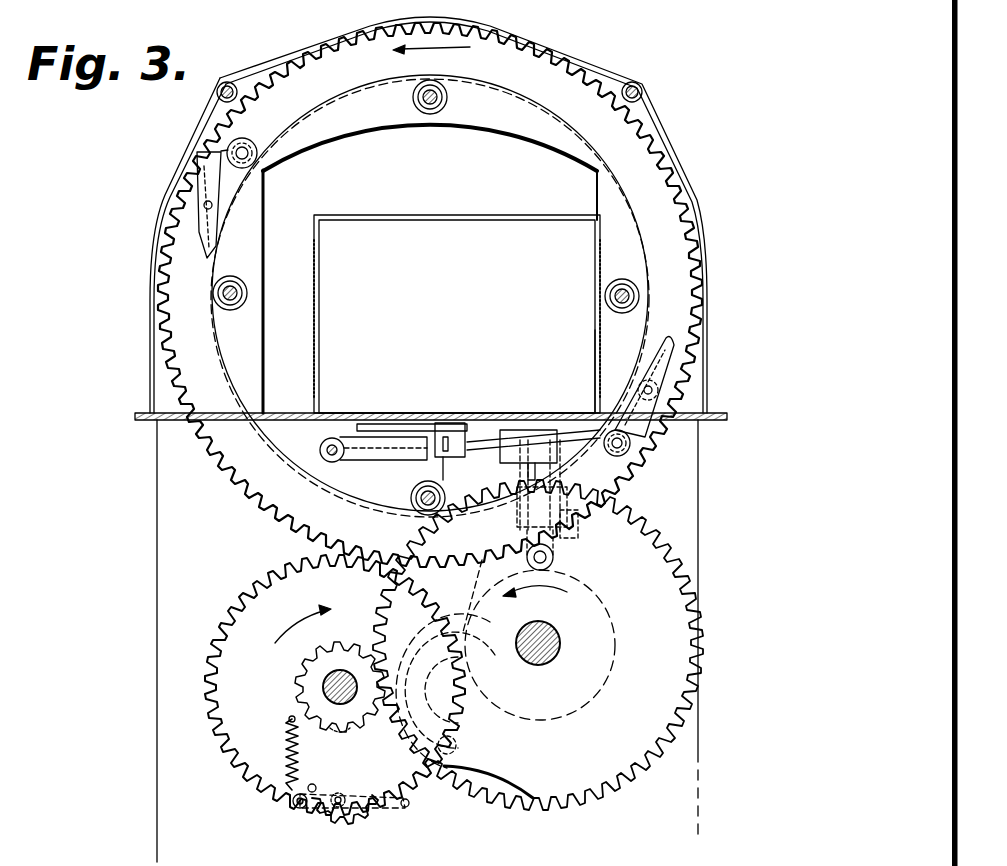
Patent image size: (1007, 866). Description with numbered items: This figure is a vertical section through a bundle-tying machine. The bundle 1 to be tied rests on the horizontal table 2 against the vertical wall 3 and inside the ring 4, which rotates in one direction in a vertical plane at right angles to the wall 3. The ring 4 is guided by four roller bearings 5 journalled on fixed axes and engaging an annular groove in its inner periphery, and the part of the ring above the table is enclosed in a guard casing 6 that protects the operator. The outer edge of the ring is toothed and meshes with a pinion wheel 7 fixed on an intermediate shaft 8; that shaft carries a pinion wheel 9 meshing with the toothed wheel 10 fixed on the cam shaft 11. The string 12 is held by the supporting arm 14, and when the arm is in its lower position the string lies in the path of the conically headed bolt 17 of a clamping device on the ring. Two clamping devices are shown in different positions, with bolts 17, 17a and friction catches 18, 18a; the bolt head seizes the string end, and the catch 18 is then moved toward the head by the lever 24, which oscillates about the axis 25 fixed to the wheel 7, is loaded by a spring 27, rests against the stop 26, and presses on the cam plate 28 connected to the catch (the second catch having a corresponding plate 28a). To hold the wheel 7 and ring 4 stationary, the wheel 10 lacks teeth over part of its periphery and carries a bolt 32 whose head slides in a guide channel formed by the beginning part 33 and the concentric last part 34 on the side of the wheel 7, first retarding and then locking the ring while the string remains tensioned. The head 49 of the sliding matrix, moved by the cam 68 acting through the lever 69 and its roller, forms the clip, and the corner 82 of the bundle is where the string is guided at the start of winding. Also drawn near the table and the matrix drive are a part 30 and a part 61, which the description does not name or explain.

The bundle 1 is at (398, 230).
The horizontal table 2 is at (343, 413).
The vertical wall 3 is at (598, 327).
The ring 4 is at (218, 392).
The roller bearings 5 is at (427, 112).
The guard casing 6 is at (167, 370).
The pinion wheel 7 is at (265, 787).
The intermediate shaft 8 is at (323, 684).
The pinion wheel 9 is at (345, 718).
The toothed wheel 10 is at (612, 762).
The cam shaft 11 is at (560, 643).
The string 12 is at (317, 314).
The supporting arm 14 is at (395, 458).
The conically headed bolt 17 is at (634, 451).
The conically headed bolt 17a is at (230, 140).
The friction catch 18 is at (662, 372).
The friction catch 18a is at (213, 177).
The lever 24 is at (410, 806).
The axis 25 is at (334, 812).
The stop 26 is at (316, 787).
The spring 27 is at (286, 748).
The cam plate 28 is at (655, 421).
The cam plate 28a is at (195, 183).
The slide block 30 is at (450, 432).
The bolt 32 is at (452, 768).
The beginning part of guide channel 33 is at (447, 655).
The last part of guide channel 34 is at (422, 720).
The head of sliding matrix 49 is at (502, 456).
The roller 61 is at (560, 568).
The cam 68 is at (585, 694).
The lever 69 is at (579, 522).
The corner 82 is at (598, 396).